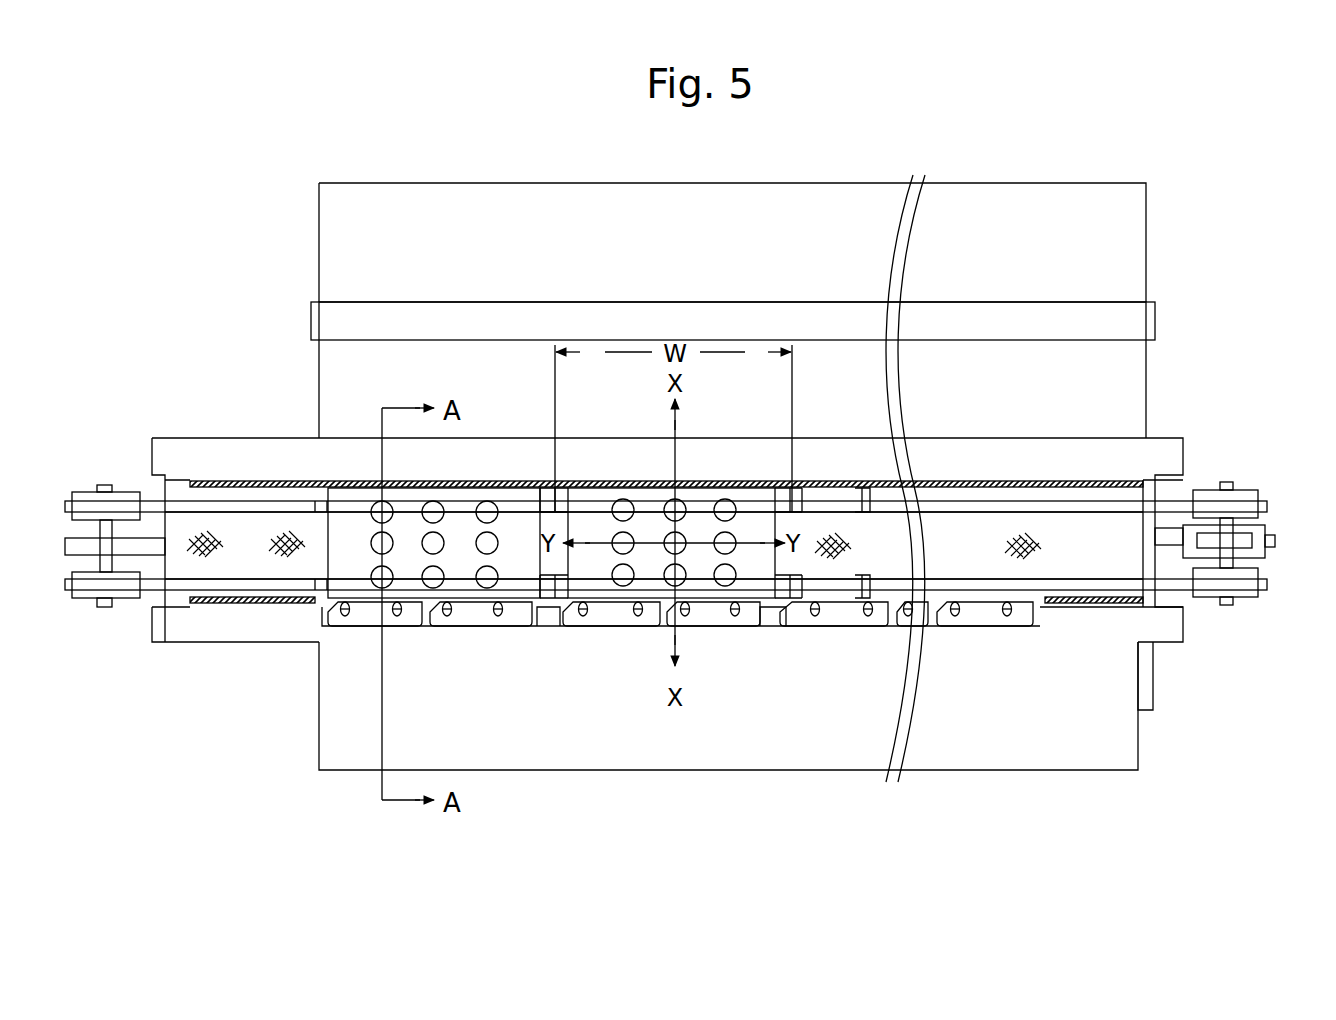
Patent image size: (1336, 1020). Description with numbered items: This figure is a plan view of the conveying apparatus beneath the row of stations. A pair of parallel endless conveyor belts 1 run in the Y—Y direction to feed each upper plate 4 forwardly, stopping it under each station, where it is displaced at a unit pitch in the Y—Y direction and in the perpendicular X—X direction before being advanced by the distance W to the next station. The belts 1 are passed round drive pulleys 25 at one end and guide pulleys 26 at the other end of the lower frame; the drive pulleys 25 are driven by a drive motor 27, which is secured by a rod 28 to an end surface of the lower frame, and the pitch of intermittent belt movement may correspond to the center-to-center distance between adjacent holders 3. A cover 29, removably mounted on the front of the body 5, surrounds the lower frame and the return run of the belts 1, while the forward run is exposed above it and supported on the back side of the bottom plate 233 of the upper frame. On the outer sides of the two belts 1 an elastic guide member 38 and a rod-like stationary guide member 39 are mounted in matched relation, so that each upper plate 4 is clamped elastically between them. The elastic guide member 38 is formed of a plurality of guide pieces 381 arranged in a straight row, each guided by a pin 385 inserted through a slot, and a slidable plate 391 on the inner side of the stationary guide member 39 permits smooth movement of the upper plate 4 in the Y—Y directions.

The endless conveyor belts 1 is at (1038, 500).
The holders 3 is at (313, 510).
The upper plate 4 is at (348, 492).
The body 5 is at (530, 310).
The drive pulleys 25 is at (1245, 493).
The guide pulleys 26 is at (88, 495).
The drive motor 27 is at (1250, 540).
The rod 28 is at (1167, 540).
The cover 29 is at (640, 745).
The elastic guide member 38 is at (862, 630).
The stationary guide member 39 is at (1113, 447).
The bottom plate 233 is at (1063, 560).
The guide pieces 381 is at (830, 627).
The pin 385 is at (590, 627).
The slidable plate 391 is at (292, 608).